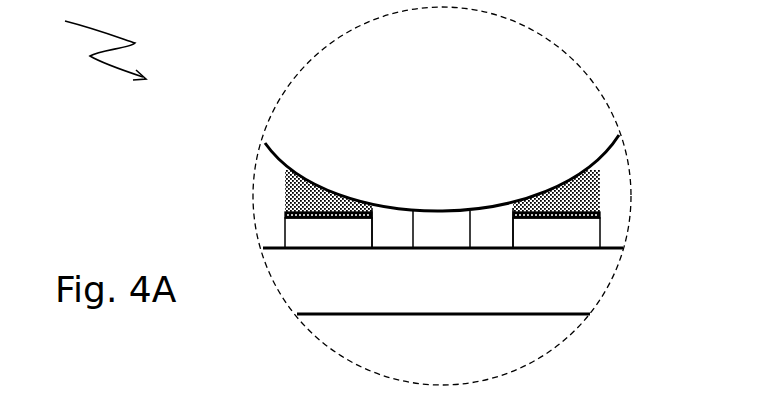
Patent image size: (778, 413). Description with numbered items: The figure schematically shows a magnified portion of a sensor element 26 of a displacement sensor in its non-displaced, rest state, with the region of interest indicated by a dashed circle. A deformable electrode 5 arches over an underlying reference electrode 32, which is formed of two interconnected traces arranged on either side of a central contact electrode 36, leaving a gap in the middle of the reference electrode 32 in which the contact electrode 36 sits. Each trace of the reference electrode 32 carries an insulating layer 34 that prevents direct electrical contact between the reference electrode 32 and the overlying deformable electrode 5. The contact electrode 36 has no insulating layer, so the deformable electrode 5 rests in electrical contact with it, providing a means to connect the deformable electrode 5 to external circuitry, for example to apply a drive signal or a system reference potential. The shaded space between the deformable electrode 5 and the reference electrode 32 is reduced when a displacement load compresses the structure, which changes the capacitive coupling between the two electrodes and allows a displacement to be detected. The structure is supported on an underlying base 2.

The substrate 2 is at (300, 291).
The deformable electrode 5 is at (344, 84).
The sensor element 26 is at (91, 43).
The reference electrode 32 is at (300, 238).
The insulating layer 34 is at (598, 212).
The contact electrode 36 is at (434, 233).